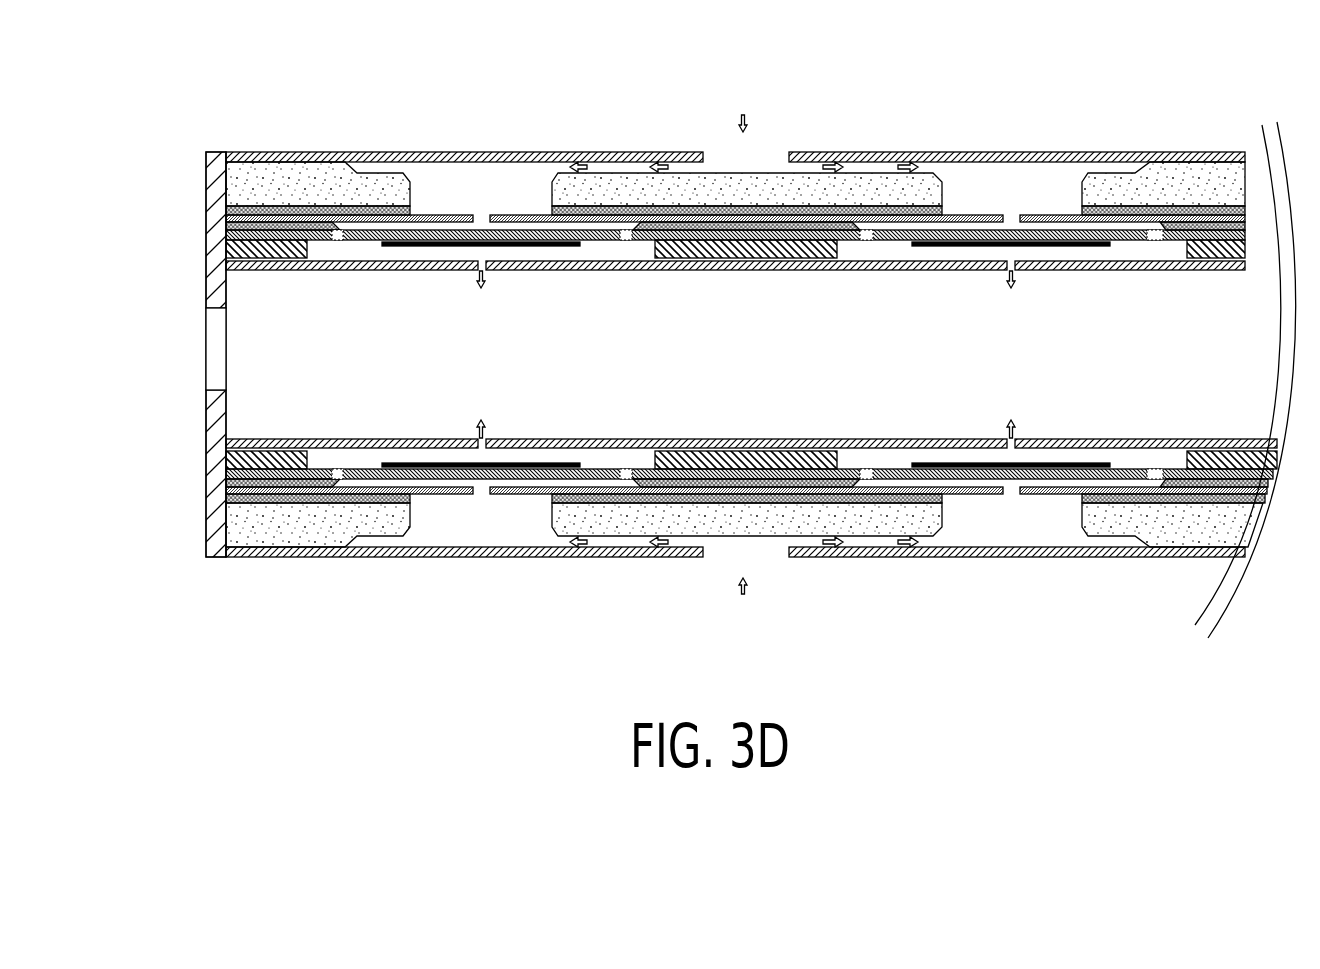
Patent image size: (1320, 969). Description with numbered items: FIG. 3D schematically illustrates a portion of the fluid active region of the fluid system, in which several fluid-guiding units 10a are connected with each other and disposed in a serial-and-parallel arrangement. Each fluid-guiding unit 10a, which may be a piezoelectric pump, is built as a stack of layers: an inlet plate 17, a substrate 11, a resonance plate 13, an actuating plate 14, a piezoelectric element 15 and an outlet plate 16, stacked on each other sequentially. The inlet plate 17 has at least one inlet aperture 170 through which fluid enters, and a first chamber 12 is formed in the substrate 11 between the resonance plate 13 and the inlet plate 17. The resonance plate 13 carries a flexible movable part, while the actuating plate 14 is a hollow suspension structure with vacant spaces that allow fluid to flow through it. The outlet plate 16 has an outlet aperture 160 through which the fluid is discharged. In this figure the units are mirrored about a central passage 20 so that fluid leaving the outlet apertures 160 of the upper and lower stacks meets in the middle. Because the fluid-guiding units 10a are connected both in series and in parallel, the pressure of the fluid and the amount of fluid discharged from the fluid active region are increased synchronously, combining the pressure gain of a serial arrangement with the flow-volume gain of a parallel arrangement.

The fluid-guiding unit 10a is at (253, 122).
The channel 20 is at (220, 341).
The inlet plate 17 is at (298, 150).
The substrate 11 is at (363, 190).
The first chamber 12 is at (493, 188).
The resonance plate 13 is at (628, 240).
The actuating plate 14 is at (535, 237).
The piezoelectric element 15 is at (447, 235).
The outlet plate 16 is at (962, 262).
The outlet aperture 160 is at (485, 287).
The inlet aperture 170 is at (785, 122).